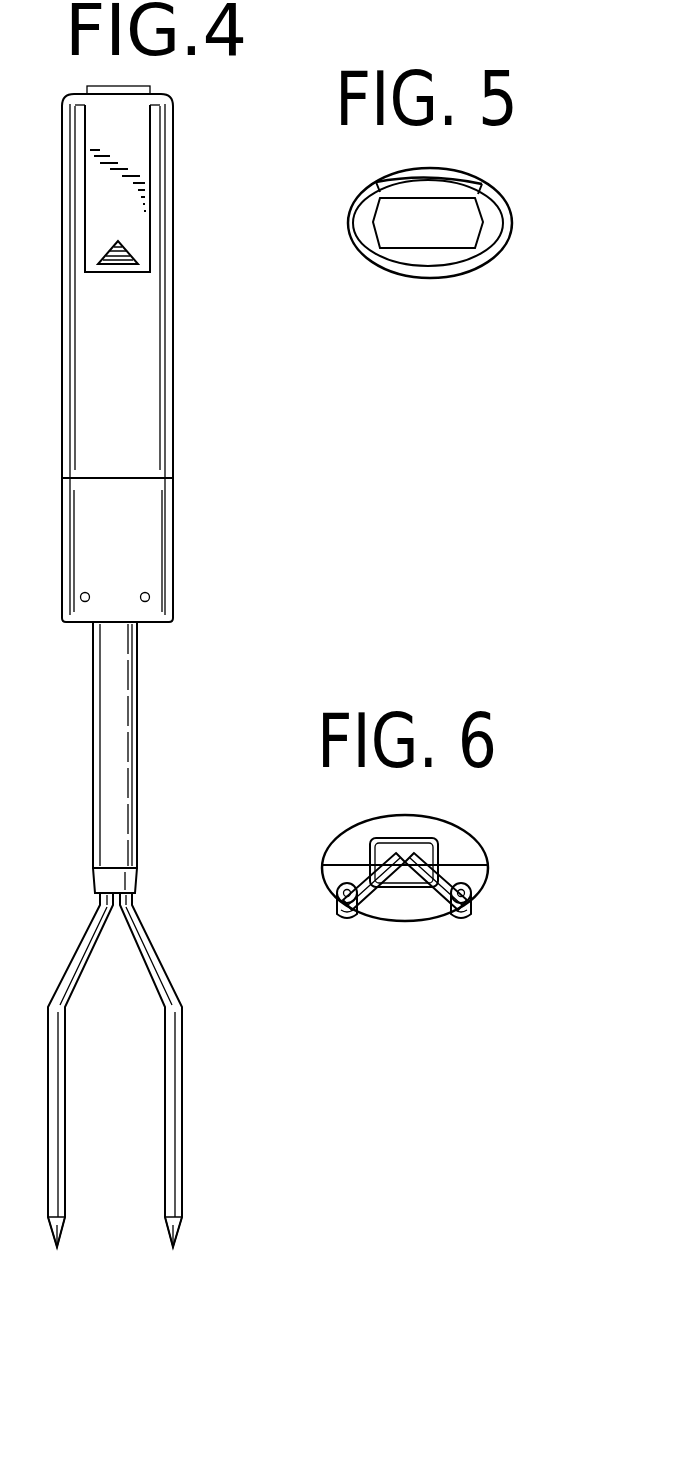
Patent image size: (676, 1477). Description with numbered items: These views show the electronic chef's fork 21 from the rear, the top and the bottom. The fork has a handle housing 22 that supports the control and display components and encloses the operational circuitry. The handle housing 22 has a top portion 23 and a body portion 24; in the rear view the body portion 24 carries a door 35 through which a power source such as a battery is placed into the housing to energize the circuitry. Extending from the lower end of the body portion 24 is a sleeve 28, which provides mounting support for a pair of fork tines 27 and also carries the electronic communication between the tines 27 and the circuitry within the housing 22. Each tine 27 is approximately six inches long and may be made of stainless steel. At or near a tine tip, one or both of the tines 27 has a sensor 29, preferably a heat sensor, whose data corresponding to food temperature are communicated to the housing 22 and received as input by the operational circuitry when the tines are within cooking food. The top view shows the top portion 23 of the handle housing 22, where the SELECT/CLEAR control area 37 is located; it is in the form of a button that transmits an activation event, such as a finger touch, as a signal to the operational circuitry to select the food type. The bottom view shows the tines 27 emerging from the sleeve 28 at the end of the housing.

In FIG. 4, the electronic chef's fork 21 is at (80, 633).
In FIG. 5, the handle housing 22 is at (378, 262).
In FIG. 5, the top portion 23 is at (492, 222).
In FIG. 4, the body portion 24 is at (90, 423).
In FIG. 4, the fork tines 27 is at (165, 1083).
In FIG. 6, the fork tines 27 is at (371, 892).
In FIG. 4, the sleeve 28 is at (93, 820).
In FIG. 4, the sensor 29 is at (167, 1229).
In FIG. 4, the door 35 is at (140, 142).
In FIG. 5, the SELECT/CLEAR control area 37 is at (470, 233).